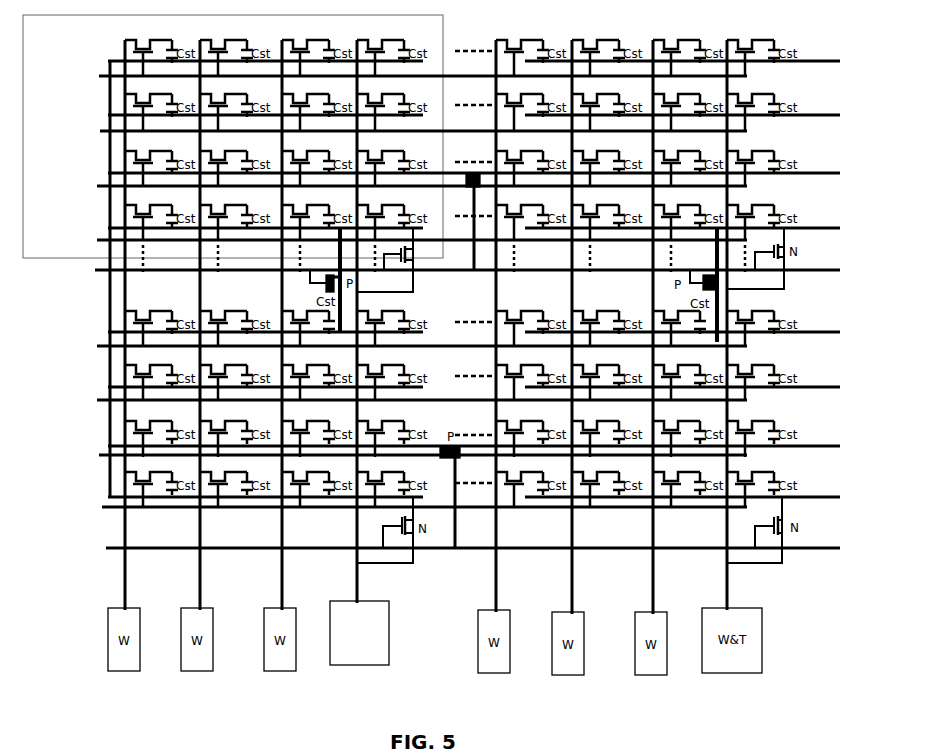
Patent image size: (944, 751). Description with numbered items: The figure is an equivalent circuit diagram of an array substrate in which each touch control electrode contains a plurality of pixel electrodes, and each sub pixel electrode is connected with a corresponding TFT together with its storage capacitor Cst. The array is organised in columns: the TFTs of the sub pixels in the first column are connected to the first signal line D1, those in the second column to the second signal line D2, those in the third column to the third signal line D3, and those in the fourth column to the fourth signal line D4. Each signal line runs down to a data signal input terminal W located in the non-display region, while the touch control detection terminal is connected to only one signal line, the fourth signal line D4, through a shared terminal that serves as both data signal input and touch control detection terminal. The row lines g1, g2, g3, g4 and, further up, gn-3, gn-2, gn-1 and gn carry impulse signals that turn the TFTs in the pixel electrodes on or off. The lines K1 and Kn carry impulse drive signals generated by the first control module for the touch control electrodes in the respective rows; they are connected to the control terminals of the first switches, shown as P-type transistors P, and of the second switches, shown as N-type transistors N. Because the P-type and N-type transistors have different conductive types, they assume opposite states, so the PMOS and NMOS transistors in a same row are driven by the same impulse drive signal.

The thin film transistor TFT is at (148, 48).
The storage capacitor Cst is at (181, 51).
The P-type transistor P is at (473, 208).
The N-type transistor N is at (393, 260).
The impulse signal gn is at (398, 81).
The impulse signal gn-1 is at (398, 133).
The impulse signal gn-2 is at (396, 188).
The impulse signal gn-3 is at (396, 240).
The impulse drive signal Kn is at (441, 272).
The impulse signal g4 is at (404, 348).
The impulse signal g3 is at (404, 400).
The impulse signal g2 is at (405, 454).
The impulse signal g1 is at (407, 507).
The impulse drive signal K1 is at (448, 551).
The first signal line D1 is at (115, 325).
The second signal line D2 is at (192, 325).
The third signal line D3 is at (270, 325).
The fourth signal line D4 is at (346, 321).
The data signal input terminal W is at (124, 639).